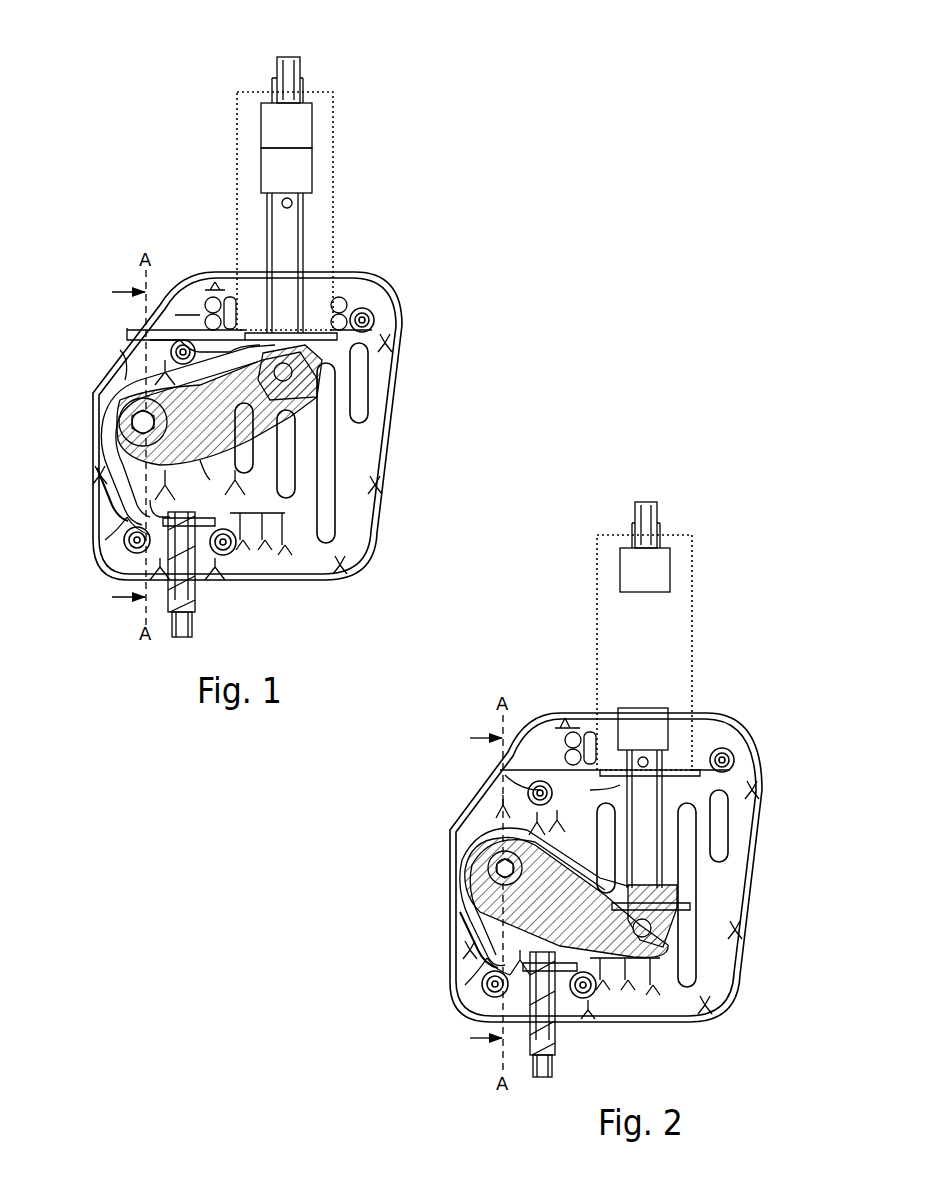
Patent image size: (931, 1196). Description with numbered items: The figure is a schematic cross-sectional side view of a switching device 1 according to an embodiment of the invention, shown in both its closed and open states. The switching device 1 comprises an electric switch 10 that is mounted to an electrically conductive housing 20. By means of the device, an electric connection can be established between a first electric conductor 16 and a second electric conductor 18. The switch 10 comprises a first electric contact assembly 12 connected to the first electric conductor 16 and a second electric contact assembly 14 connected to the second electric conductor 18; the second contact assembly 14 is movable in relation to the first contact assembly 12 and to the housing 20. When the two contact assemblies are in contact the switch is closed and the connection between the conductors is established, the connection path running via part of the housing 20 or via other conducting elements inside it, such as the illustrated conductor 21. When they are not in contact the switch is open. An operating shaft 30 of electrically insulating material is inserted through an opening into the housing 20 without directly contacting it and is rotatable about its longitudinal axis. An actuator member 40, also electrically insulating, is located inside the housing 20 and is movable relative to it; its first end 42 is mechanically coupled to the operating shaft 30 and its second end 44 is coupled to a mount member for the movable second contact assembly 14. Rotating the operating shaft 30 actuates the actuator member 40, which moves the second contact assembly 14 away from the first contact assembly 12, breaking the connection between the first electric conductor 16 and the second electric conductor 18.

In FIG. 1, the switching device 1 is at (409, 95).
In FIG. 1, the electric switch 10 is at (265, 173).
In FIG. 2, the electric switch 10 is at (621, 672).
In FIG. 1, the first electric contact assembly 12 is at (261, 133).
In FIG. 2, the first electric contact assembly 12 is at (620, 580).
In FIG. 1, the second electric contact assembly 14 is at (261, 183).
In FIG. 2, the second electric contact assembly 14 is at (618, 732).
In FIG. 1, the first electric conductor 16 is at (300, 60).
In FIG. 2, the first electric conductor 16 is at (660, 506).
In FIG. 1, the second electric conductor 18 is at (196, 587).
In FIG. 2, the second electric conductor 18 is at (556, 1035).
In FIG. 1, the electrically conductive housing 20 is at (418, 350).
In FIG. 2, the electrically conductive housing 20 is at (766, 835).
In FIG. 1, the conductor 21 is at (127, 517).
In FIG. 2, the conductor 21 is at (487, 958).
In FIG. 1, the operating shaft 30 is at (130, 433).
In FIG. 2, the operating shaft 30 is at (484, 878).
In FIG. 1, the actuator member 40 is at (171, 419).
In FIG. 2, the actuator member 40 is at (524, 863).
In FIG. 1, the first end 42 is at (97, 468).
In FIG. 2, the first end 42 is at (460, 912).
In FIG. 1, the second end 44 is at (327, 363).
In FIG. 2, the second end 44 is at (652, 928).